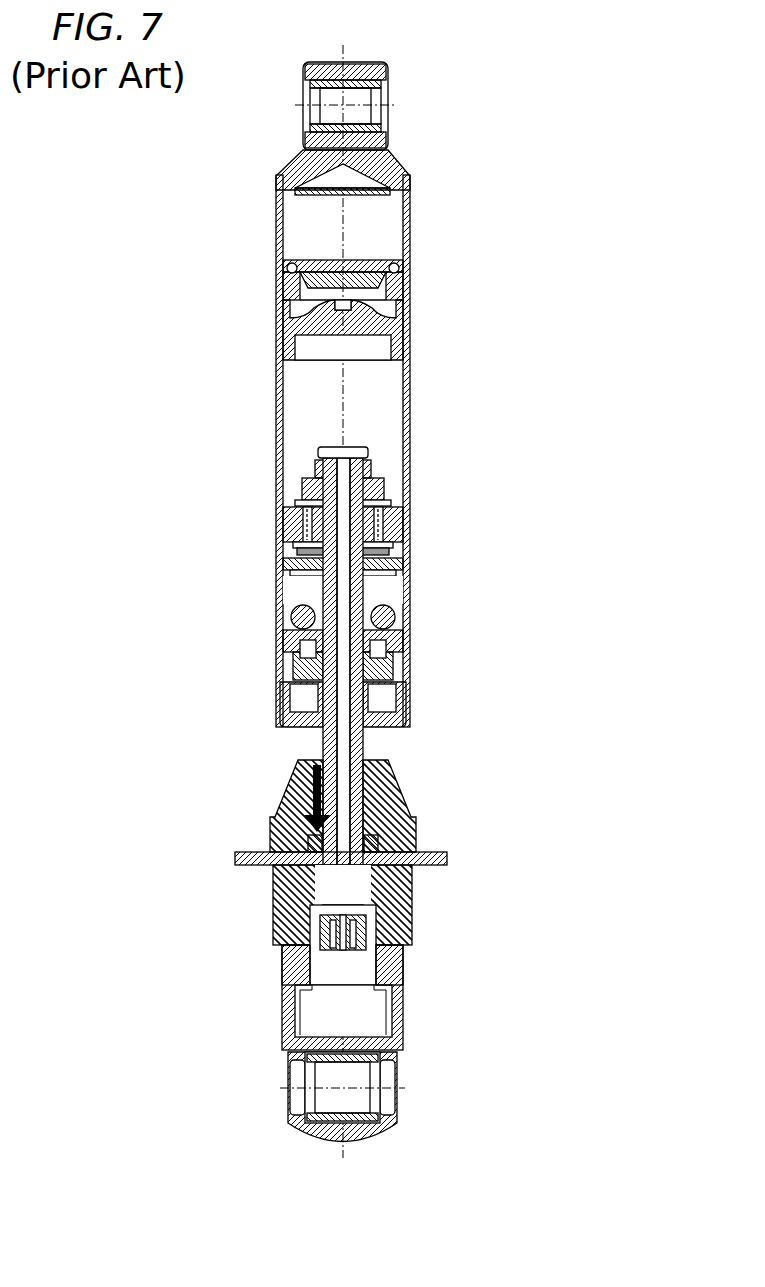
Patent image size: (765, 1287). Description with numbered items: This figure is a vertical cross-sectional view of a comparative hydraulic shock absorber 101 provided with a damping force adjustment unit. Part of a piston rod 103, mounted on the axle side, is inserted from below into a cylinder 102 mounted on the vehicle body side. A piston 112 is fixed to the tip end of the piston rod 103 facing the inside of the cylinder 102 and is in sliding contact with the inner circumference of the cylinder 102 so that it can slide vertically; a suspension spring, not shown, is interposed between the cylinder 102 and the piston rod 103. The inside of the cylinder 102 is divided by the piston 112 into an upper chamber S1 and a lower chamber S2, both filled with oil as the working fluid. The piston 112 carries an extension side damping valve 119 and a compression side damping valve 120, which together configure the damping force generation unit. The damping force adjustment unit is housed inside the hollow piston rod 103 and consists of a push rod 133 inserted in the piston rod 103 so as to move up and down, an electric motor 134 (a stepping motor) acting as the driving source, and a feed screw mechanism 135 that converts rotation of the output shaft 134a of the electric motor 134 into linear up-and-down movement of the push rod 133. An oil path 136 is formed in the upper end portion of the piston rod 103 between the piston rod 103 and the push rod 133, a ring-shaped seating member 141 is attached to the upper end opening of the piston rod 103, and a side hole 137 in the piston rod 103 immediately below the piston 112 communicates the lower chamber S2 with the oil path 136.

The hydraulic shock absorber 101 is at (447, 186).
The cylinder 102 is at (278, 392).
The piston rod 103 is at (367, 595).
The piston 112 is at (397, 513).
The extension side damping valve 119 is at (388, 500).
The compression side damping valve 120 is at (395, 559).
The push rod 133 is at (342, 748).
The electric motor 134 is at (377, 1017).
The output shaft 134a is at (310, 952).
The feed screw mechanism 135 is at (370, 932).
The oil path 136 is at (349, 488).
The side hole 137 is at (300, 575).
The ring-shaped seating member 141 is at (335, 447).
The upper chamber S1 is at (383, 412).
The lower chamber S2 is at (298, 597).